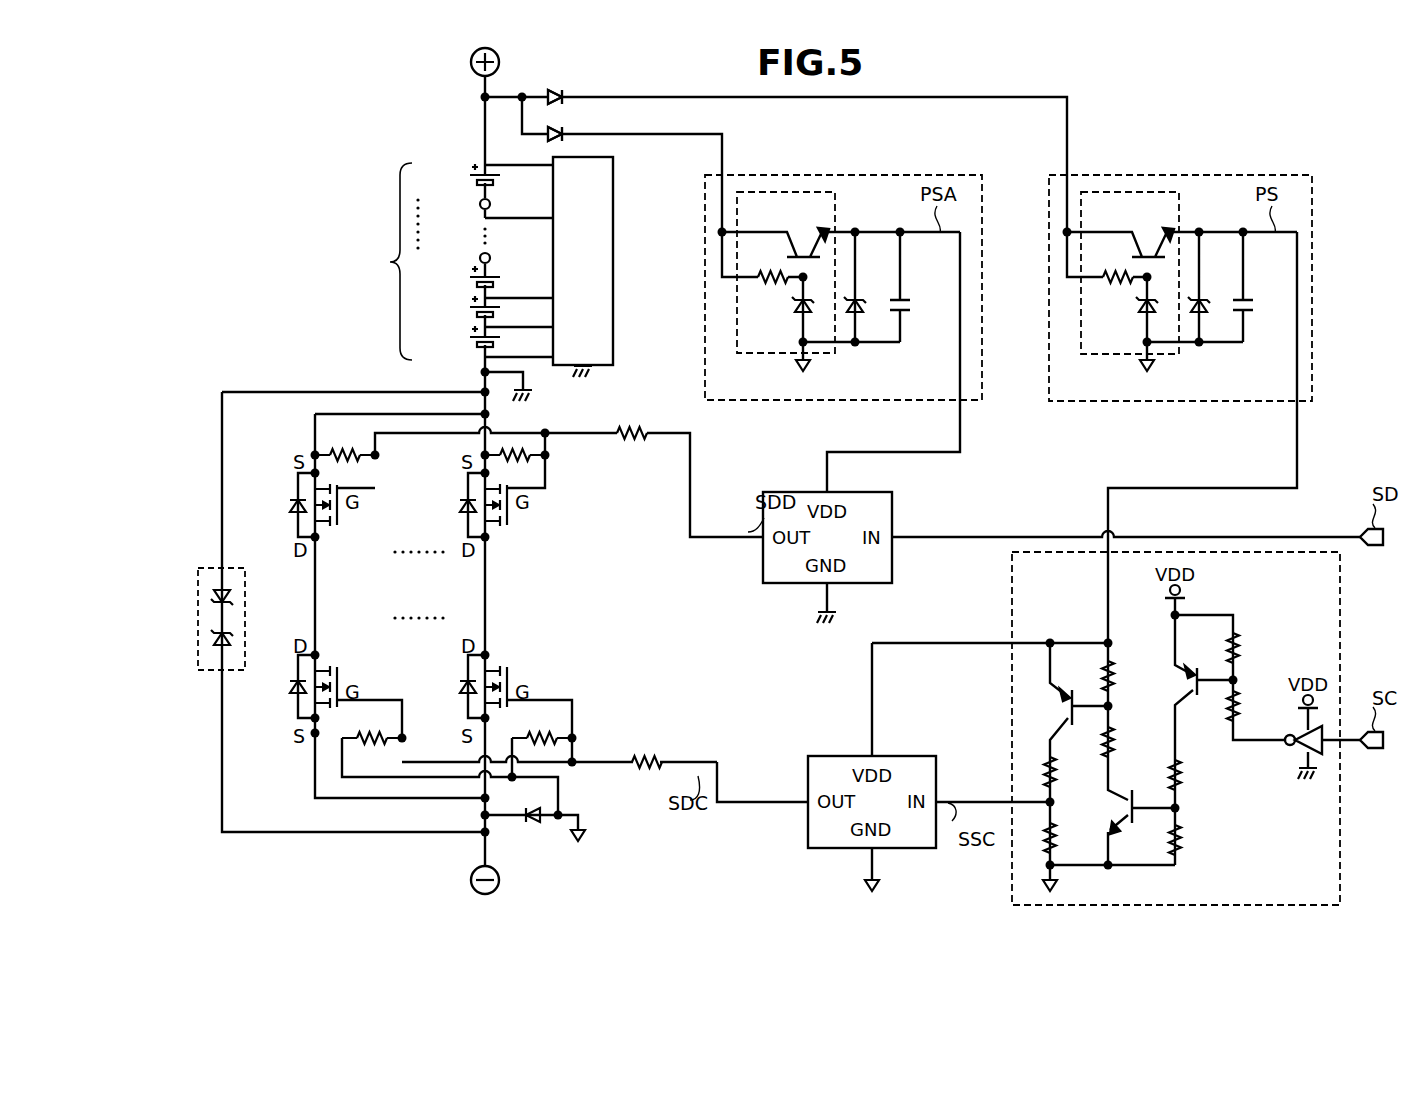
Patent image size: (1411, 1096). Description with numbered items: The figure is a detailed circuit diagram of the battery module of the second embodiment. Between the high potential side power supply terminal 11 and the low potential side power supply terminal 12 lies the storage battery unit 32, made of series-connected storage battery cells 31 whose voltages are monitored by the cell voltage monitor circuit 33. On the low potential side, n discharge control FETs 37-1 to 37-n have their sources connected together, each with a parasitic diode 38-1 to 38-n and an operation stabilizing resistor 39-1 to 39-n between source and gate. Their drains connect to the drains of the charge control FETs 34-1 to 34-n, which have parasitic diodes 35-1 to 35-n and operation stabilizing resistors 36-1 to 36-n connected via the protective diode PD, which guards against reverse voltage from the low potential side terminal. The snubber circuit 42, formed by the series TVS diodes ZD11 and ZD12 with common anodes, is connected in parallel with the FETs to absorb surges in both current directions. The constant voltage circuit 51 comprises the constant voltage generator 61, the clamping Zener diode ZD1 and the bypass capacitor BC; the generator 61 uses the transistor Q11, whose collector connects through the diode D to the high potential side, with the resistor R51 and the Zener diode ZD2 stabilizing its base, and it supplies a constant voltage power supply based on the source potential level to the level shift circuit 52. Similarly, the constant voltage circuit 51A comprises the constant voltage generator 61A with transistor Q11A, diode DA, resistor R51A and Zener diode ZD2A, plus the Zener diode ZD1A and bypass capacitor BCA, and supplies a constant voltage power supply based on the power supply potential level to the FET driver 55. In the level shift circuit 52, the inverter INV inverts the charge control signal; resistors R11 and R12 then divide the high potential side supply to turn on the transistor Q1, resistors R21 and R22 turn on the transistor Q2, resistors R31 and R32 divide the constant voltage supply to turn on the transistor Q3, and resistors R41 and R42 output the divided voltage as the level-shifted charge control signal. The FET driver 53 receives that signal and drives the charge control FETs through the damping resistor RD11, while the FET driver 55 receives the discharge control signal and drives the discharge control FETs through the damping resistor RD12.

The high potential side power supply terminal 11 is at (500, 60).
The low potential side power supply terminal 12 is at (470, 879).
The storage battery cell 31 is at (468, 346).
The storage battery unit 32 is at (387, 261).
The cell voltage monitor circuit 33 is at (613, 170).
The charge control FET 34-1 is at (330, 665).
The charge control FET 34-n is at (500, 665).
The parasitic diode 35-1 is at (289, 687).
The parasitic diode 35-n is at (460, 692).
The operation stabilizing resistor 36-1 is at (373, 740).
The operation stabilizing resistor 36-n is at (550, 742).
The discharge control FET 37-1 is at (330, 535).
The discharge control FET 37-n is at (500, 535).
The parasitic diode 38-1 is at (290, 507).
The parasitic diode 38-n is at (460, 504).
The operation stabilizing resistor 39-1 is at (332, 454).
The operation stabilizing resistor 39-n is at (517, 452).
The snubber circuit 42 is at (210, 568).
The constant voltage circuit 51 is at (1255, 175).
The constant voltage circuit 51A is at (920, 175).
The level shift circuit 52 is at (1340, 590).
The FET driver 53 is at (900, 756).
The FET driver 55 is at (858, 492).
The constant voltage generator 61 is at (1179, 206).
The constant voltage generator 61A is at (835, 206).
The diode D is at (556, 90).
The diode DA is at (556, 127).
The protective diode PD is at (535, 826).
The damping resistor RD11 is at (648, 770).
The damping resistor RD12 is at (634, 441).
The TVS diode ZD11 is at (210, 597).
The TVS diode ZD12 is at (210, 640).
The resistor R51A is at (758, 280).
The resistor R51 is at (1111, 282).
The transistor Q11A is at (792, 244).
The transistor Q11 is at (1137, 244).
The Zener diode ZD2A is at (794, 323).
The Zener diode ZD1A is at (868, 323).
The Zener diode ZD2 is at (1138, 323).
The Zener diode ZD1 is at (1212, 323).
The bypass capacitor BCA is at (905, 312).
The bypass capacitor BC is at (1240, 300).
The resistor R31 is at (1136, 664).
The resistor R32 is at (1136, 730).
The resistor R41 is at (1078, 760).
The resistor R42 is at (1078, 826).
The resistor R21 is at (1203, 763).
The resistor R22 is at (1203, 828).
The resistor R11 is at (1261, 636).
The resistor R12 is at (1261, 706).
The transistor Q1 is at (1193, 685).
The transistor Q2 is at (1120, 790).
The transistor Q3 is at (1060, 730).
The inverter INV is at (1297, 752).